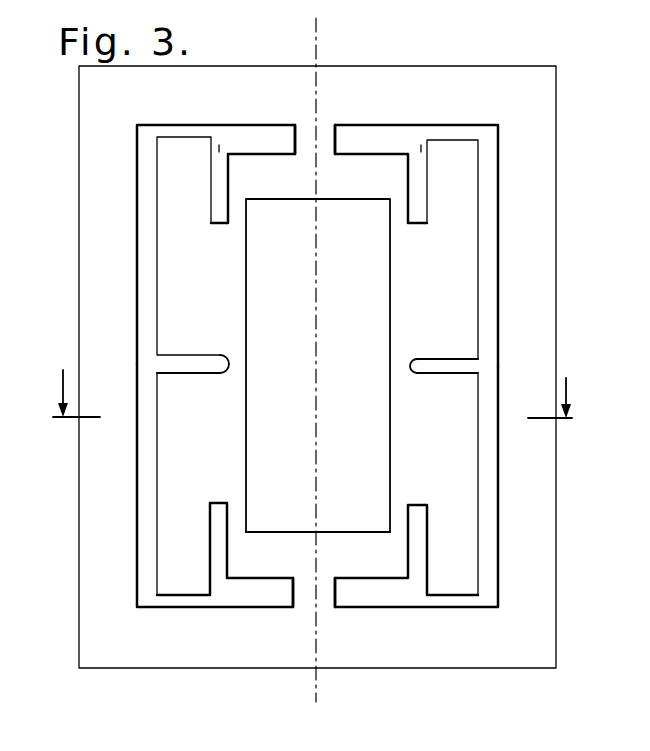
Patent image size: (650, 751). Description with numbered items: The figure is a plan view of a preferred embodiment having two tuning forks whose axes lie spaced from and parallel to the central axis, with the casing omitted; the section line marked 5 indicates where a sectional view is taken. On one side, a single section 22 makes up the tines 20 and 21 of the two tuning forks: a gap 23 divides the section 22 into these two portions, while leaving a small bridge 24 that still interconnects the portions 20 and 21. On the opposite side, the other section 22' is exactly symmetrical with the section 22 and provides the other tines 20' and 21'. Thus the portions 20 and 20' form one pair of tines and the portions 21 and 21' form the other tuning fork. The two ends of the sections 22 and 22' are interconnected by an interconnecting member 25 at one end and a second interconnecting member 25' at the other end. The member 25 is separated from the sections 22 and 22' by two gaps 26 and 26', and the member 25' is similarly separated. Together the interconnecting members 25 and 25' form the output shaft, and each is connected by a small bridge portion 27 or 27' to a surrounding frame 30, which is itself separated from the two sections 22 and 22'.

The section line 5- 5 is at (314, 401).
The tine 20 is at (462, 245).
The tine 20' is at (216, 244).
The tine 21 is at (460, 486).
The tine 21' is at (215, 481).
The section 22 is at (359, 283).
The section 22' is at (277, 274).
The gap 23 is at (476, 366).
The bridge 24 is at (408, 366).
The interconnecting member 25 is at (318, 365).
The interconnecting member 25' is at (318, 518).
The gap 26 is at (436, 95).
The gap 26' is at (250, 97).
The bridge portion 27 is at (338, 96).
The bridge portion 27' is at (326, 550).
The frame 30 is at (549, 102).